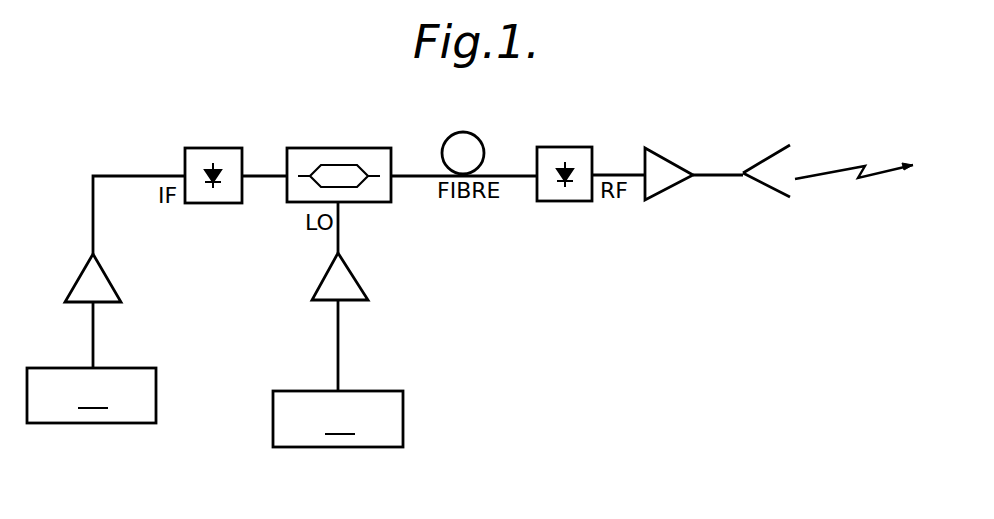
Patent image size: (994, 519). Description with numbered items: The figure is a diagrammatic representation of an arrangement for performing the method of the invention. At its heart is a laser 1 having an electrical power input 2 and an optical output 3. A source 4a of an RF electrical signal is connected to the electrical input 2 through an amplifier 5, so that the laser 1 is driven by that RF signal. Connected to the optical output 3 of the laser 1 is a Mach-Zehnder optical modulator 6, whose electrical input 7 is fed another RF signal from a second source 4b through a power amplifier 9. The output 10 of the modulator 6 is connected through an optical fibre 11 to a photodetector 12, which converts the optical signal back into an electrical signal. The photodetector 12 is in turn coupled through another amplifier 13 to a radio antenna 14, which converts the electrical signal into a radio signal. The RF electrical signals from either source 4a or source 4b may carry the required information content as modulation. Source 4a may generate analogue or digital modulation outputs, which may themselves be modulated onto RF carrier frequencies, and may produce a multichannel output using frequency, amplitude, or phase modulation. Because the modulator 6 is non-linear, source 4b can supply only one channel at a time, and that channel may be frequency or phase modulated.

The laser 1 is at (212, 148).
The electrical power input 2 is at (134, 176).
The optical output 3 is at (264, 177).
The source of RF electrical signal 4a is at (91, 362).
The source of RF signal 4b is at (338, 373).
The amplifier 5 is at (104, 272).
The Mach-Zehnder optical modulator 6 is at (338, 148).
The electrical input 7 is at (339, 222).
The power amplifier 9 is at (356, 282).
The output 10 is at (419, 177).
The optical fibre 11 is at (480, 135).
The photodetector 12 is at (583, 201).
The amplifier 13 is at (672, 187).
The radio antenna 14 is at (760, 185).